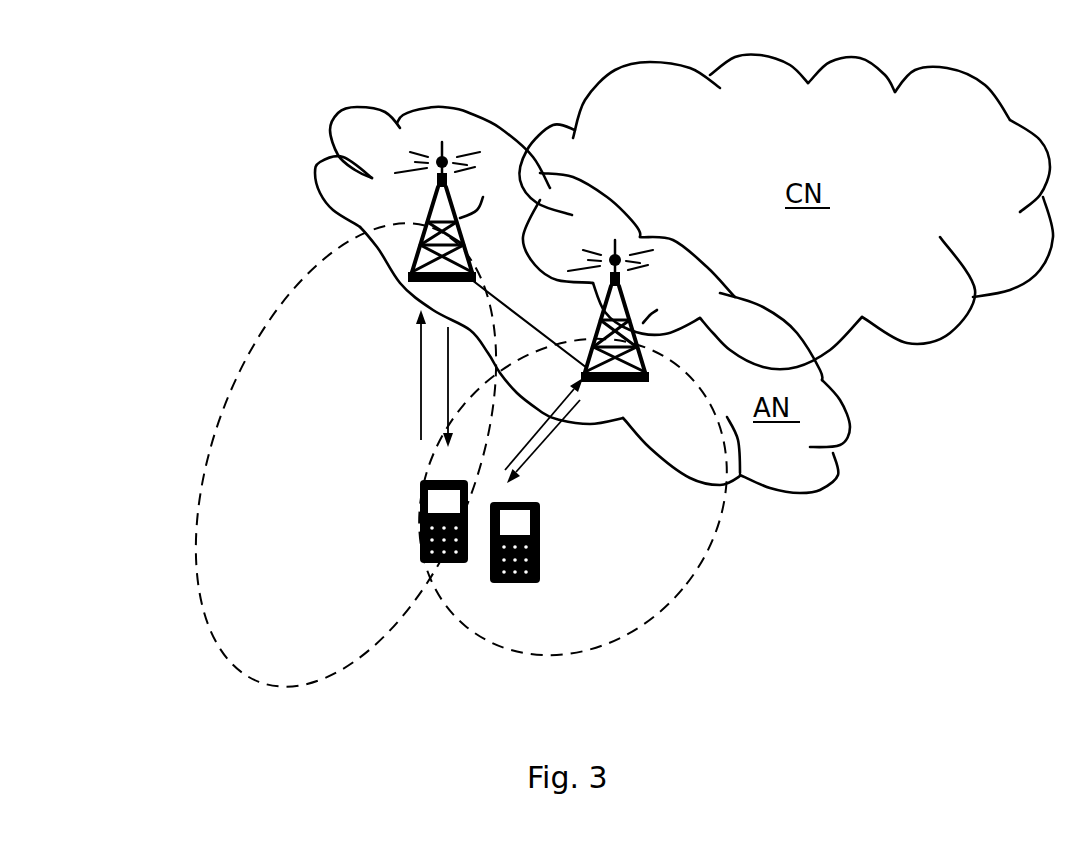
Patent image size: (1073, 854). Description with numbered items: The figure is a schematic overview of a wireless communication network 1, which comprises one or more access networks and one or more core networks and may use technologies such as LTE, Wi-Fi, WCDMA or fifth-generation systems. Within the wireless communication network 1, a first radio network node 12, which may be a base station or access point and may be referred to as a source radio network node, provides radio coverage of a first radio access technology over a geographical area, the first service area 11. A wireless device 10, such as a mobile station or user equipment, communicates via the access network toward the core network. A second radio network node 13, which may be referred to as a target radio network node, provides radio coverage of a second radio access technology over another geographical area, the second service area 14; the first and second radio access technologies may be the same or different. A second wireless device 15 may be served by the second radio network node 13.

The wireless communication network 1 is at (279, 65).
The wireless device 10 is at (421, 547).
The first service area 11 is at (363, 462).
The first radio network node 12 is at (457, 212).
The second radio network node 13 is at (630, 311).
The second service area 14 is at (627, 482).
The second wireless device 15 is at (536, 571).